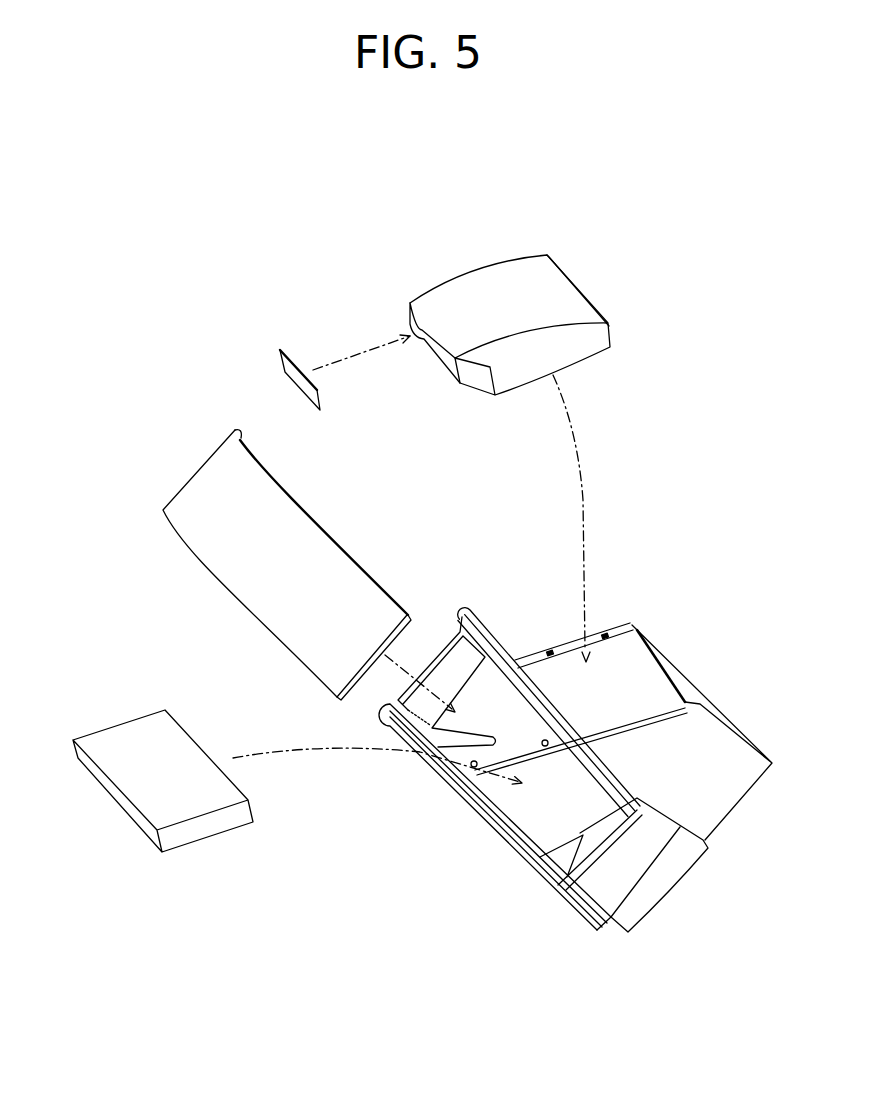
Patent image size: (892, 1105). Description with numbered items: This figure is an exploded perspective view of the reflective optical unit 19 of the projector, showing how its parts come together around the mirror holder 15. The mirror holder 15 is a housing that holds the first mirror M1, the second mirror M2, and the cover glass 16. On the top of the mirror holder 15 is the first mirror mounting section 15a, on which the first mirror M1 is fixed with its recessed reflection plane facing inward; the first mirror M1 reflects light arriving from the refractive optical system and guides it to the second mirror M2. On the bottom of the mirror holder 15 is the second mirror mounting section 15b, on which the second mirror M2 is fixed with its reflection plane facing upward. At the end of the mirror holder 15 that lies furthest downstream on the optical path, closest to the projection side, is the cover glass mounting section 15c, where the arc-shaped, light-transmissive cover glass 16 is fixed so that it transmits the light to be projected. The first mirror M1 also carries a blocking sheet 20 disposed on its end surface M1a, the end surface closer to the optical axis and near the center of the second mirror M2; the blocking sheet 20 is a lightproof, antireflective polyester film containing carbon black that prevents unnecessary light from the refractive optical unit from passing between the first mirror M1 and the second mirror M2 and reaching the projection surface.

The reflective optical unit 19 is at (152, 246).
The first mirror M1 is at (487, 298).
The end surface M1a is at (418, 313).
The blocking sheet 20 is at (297, 373).
The cover glass 16 is at (213, 482).
The second mirror M2 is at (130, 750).
The mirror holder 15 is at (672, 620).
The first mirror mounting section 15a is at (573, 673).
The second mirror mounting section 15b is at (532, 810).
The cover glass mounting section 15c is at (452, 638).